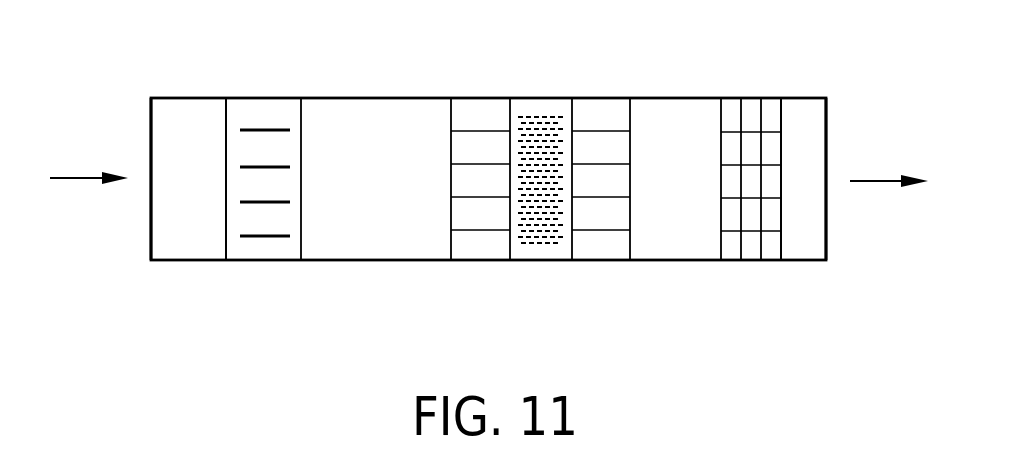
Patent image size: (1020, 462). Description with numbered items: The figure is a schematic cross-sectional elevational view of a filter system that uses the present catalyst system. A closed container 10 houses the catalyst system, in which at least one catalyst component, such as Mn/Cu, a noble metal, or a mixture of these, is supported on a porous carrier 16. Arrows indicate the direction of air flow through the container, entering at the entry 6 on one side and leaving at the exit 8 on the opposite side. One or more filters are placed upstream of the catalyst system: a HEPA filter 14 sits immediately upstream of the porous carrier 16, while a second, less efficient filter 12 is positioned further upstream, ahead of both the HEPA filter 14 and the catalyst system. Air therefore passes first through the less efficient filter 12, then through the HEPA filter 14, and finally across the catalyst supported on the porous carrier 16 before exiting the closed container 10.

The entry 6 is at (150, 229).
The exit 8 is at (828, 231).
The closed container 10 is at (373, 263).
The second, less efficient filter 12 is at (267, 107).
The HEPA filter 14 is at (490, 112).
The porous carrier 16 is at (755, 108).